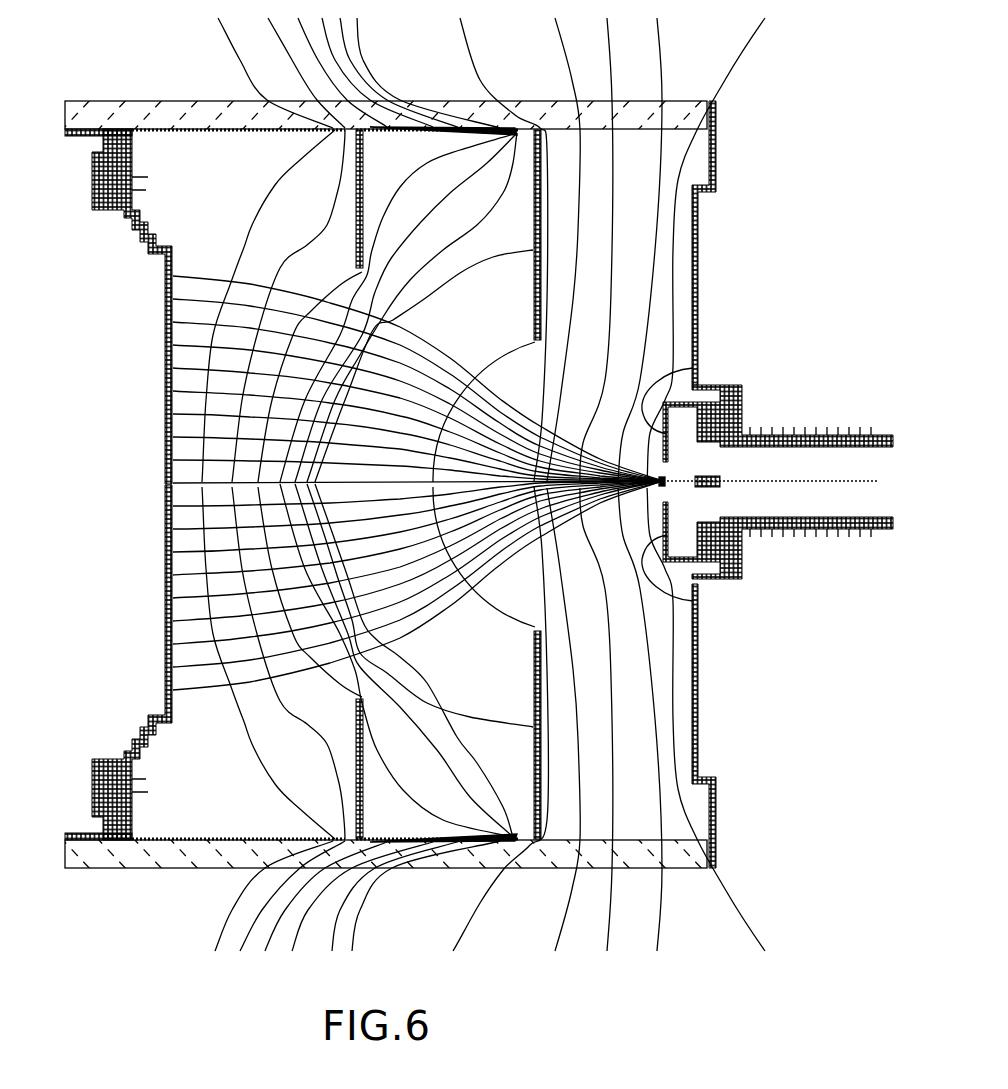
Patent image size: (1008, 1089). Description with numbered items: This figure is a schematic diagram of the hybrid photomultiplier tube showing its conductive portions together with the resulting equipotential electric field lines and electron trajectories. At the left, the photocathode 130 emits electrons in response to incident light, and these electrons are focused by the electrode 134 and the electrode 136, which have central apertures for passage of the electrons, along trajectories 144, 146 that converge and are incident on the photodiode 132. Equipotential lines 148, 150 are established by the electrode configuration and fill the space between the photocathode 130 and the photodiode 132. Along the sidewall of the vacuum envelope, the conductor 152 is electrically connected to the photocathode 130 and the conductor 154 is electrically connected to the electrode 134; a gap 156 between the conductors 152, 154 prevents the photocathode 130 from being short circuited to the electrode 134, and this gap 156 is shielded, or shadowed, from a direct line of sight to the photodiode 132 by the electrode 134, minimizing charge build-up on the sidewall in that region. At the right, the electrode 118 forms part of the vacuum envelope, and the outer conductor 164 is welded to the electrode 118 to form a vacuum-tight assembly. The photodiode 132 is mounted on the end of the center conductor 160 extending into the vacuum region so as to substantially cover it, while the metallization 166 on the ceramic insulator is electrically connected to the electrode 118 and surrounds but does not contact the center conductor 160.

The electrode 118 is at (698, 296).
The photocathode 130 is at (165, 492).
The photodiode 132 is at (697, 593).
The electrode 134 is at (355, 232).
The electrode 136 is at (534, 293).
The electron trajectory 144 is at (447, 607).
The electron trajectory 146 is at (397, 623).
The equipotential line 148 is at (237, 732).
The equipotential line 150 is at (300, 738).
The conductor 152 is at (203, 128).
The conductor 154 is at (393, 100).
The gap 156 is at (325, 152).
The center conductor 160 is at (683, 484).
The outer conductor 164 is at (741, 544).
The metallization 166 is at (693, 386).